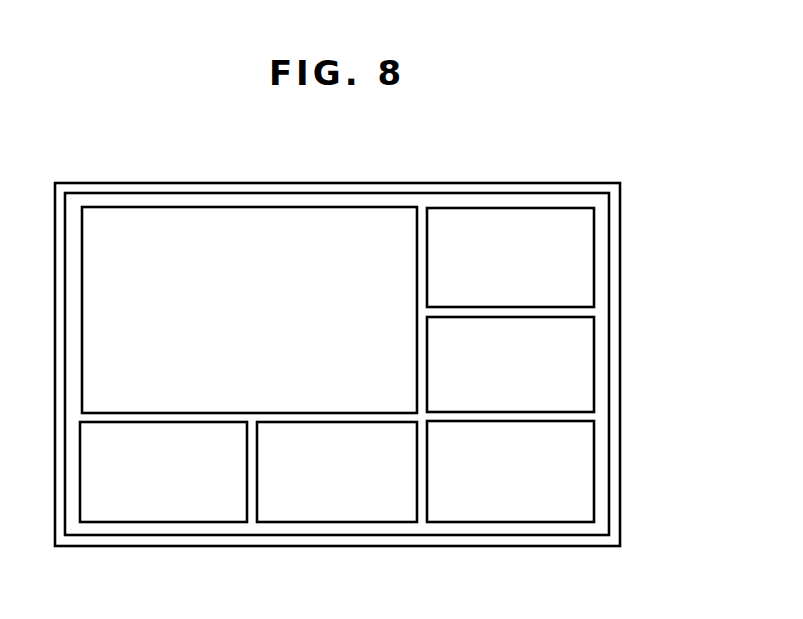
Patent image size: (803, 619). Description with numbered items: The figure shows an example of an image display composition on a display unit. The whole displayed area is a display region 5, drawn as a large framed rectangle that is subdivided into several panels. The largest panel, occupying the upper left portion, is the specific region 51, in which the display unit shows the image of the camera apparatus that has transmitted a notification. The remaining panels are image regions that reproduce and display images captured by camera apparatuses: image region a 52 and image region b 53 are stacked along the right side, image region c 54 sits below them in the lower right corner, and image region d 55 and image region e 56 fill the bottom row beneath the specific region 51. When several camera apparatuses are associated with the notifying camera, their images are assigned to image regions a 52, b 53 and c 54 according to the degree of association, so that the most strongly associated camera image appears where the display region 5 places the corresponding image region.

The display region 5 is at (510, 183).
The specific region 51 is at (247, 207).
The image region a 52 is at (594, 257).
The image region b 53 is at (594, 363).
The image region c 54 is at (163, 522).
The image region d 55 is at (337, 522).
The image region e 56 is at (594, 470).